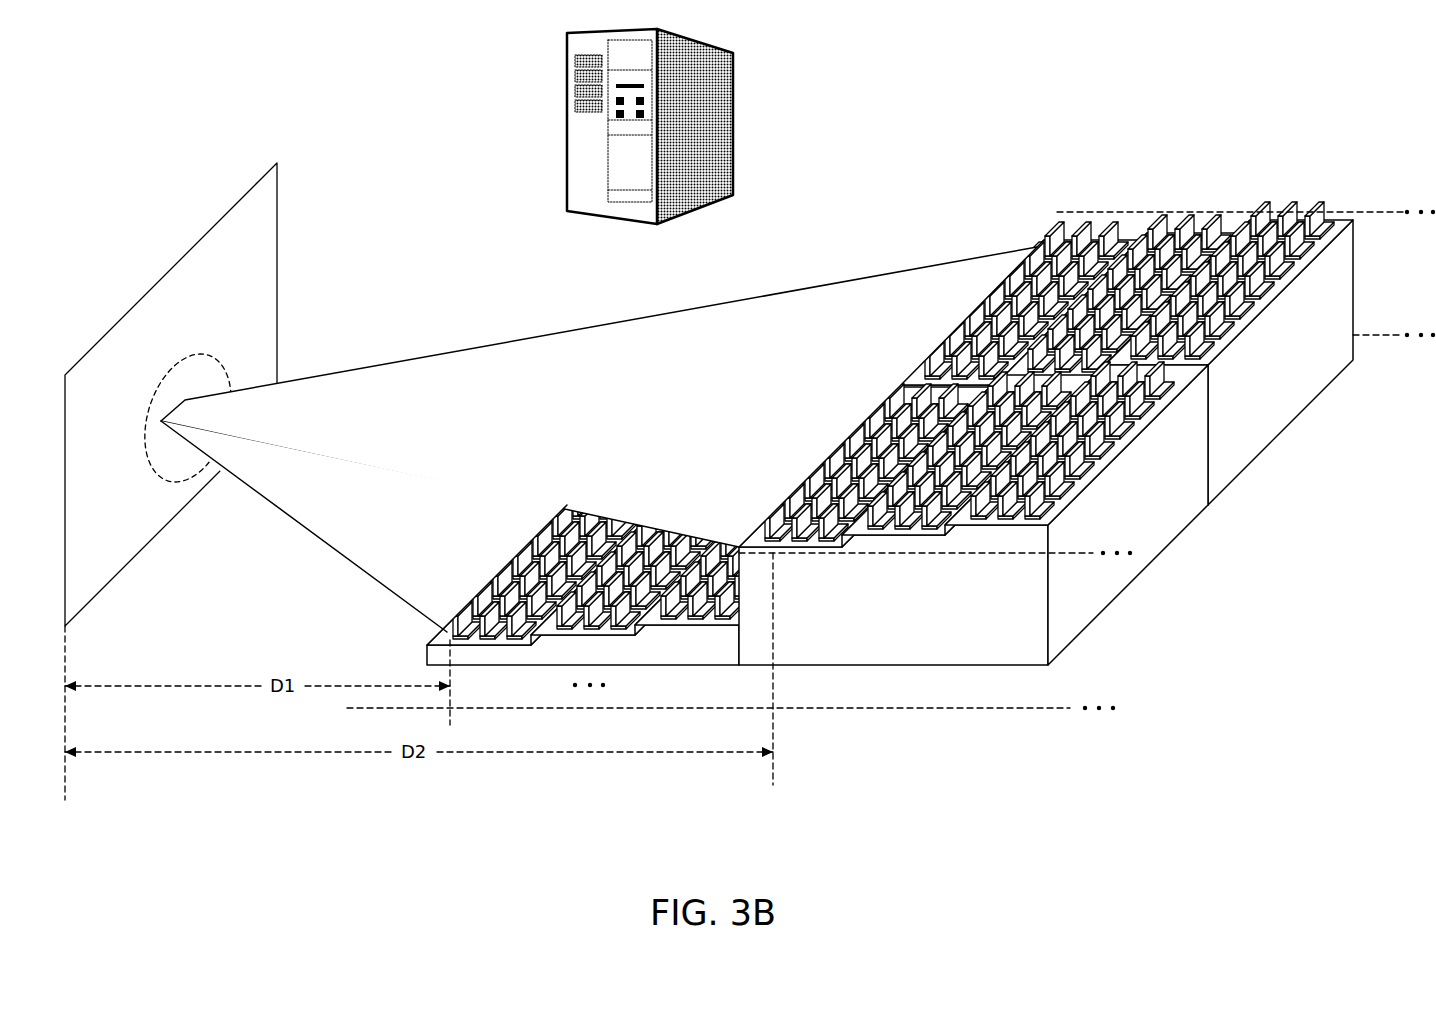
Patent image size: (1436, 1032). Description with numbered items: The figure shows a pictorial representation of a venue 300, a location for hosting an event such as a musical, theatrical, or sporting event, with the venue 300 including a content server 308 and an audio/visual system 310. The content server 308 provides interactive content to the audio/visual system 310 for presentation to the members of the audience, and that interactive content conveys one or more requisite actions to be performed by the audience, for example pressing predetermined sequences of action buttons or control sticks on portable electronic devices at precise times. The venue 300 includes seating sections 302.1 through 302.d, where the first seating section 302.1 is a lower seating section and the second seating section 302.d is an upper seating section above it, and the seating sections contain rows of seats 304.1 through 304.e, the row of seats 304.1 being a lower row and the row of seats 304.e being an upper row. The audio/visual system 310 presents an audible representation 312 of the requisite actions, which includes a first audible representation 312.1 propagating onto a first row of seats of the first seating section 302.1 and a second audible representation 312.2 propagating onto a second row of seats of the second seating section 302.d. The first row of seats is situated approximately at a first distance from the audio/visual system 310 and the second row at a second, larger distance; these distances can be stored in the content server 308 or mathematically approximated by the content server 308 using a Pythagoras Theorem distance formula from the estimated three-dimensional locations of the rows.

The venue 300 is at (709, 368).
The content server 308 is at (733, 108).
The audio/visual system 310 is at (171, 267).
The audible representation 312 is at (212, 353).
The first audible representation 312.1 is at (287, 488).
The second audible representation 312.2 is at (483, 381).
The first seating section 302.1 is at (599, 585).
The second seating section 302.d is at (1057, 212).
The row of seats 304.1 is at (455, 645).
The row of seats 304.e is at (722, 620).